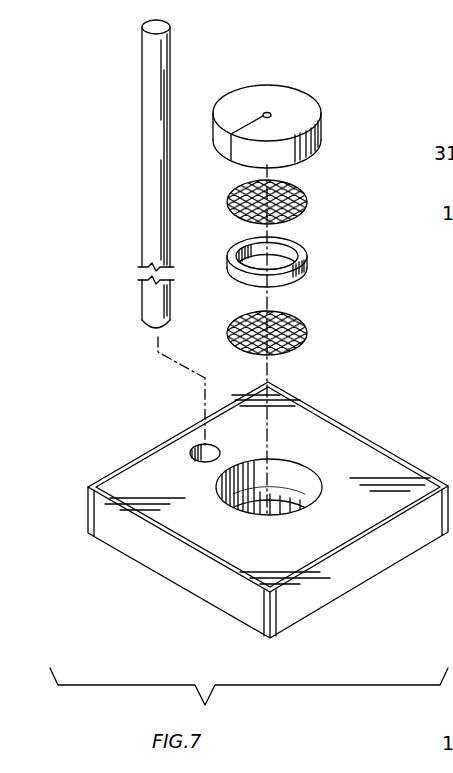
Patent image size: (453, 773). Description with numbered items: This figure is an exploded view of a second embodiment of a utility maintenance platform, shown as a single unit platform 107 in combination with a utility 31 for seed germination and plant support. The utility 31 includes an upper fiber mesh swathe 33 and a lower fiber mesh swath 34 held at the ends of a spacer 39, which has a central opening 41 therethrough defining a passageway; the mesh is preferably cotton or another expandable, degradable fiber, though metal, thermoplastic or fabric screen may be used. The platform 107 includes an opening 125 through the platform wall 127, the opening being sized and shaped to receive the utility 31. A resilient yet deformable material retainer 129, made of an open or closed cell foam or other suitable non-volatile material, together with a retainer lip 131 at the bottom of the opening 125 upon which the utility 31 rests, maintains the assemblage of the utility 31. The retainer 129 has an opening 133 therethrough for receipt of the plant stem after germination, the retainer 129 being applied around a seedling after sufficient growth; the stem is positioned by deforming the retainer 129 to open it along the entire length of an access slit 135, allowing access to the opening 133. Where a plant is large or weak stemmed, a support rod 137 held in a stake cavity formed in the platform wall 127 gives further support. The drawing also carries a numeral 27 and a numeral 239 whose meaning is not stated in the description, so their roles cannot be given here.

The single unit platform 107 is at (148, 651).
The support rod 137 is at (137, 153).
The retainer 129 is at (284, 98).
The opening 133 is at (266, 110).
The access slit 135 is at (238, 128).
The upper fiber mesh swathe 33 is at (238, 186).
The spacer 39 is at (247, 287).
The central opening 41 is at (252, 263).
The utility 31 is at (326, 257).
The lower fiber mesh swath 34 is at (296, 350).
The rod axis / insertion direction 27 is at (134, 366).
The platform wall 127 is at (340, 585).
The opening 125 is at (216, 478).
The retainer lip 131 is at (233, 494).
The small hole in base block 239 is at (195, 448).